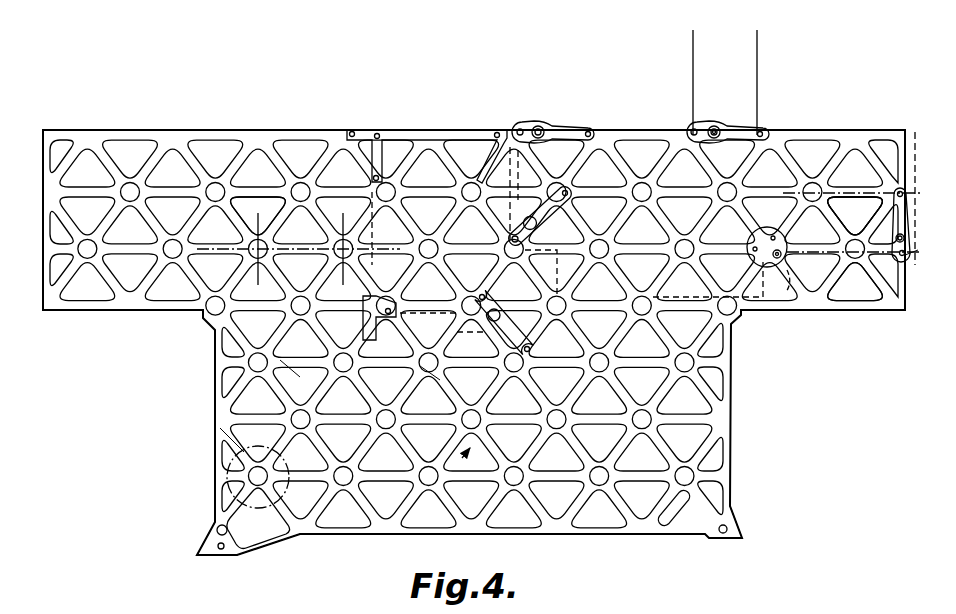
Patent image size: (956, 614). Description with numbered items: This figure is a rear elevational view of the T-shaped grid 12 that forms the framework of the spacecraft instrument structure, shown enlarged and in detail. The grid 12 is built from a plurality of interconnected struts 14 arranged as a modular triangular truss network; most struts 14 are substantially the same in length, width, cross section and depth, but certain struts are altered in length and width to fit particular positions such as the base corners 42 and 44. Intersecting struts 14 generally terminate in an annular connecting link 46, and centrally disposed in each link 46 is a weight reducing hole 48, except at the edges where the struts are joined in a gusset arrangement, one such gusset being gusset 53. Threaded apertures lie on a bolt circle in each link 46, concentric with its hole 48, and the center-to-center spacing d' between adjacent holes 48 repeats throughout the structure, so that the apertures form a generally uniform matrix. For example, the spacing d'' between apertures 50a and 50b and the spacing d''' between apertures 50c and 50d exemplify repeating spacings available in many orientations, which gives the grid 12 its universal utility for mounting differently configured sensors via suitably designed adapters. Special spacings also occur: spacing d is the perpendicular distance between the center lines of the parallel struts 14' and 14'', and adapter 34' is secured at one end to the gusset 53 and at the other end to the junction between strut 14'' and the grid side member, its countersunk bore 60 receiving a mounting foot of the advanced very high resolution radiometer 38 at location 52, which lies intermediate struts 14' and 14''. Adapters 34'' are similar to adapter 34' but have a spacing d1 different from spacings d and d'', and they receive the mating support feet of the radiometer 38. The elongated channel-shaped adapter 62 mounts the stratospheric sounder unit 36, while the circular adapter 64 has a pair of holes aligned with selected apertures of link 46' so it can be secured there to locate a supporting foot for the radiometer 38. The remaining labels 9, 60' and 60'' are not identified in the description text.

The pivot recess 9 is at (230, 478).
The grid 12 is at (814, 118).
The struts 14 is at (258, 166).
The strut 14' is at (839, 192).
The strut 14'' is at (855, 301).
The adapter 34' is at (860, 199).
The adapters 34'' is at (677, 105).
The stratospheric sounder unit 36 is at (372, 192).
The advanced very high resolution radiometer 38 is at (507, 135).
The base corner 42 is at (748, 518).
The base corner 44 is at (205, 530).
The annular connecting link 46 is at (474, 313).
The link 46' is at (790, 308).
The weight reducing hole 48 is at (208, 186).
The aperture 50a is at (225, 430).
The aperture 50b is at (306, 387).
The aperture 50c is at (441, 378).
The aperture 50d is at (472, 436).
The location 52 is at (915, 256).
The gusset 53 is at (900, 190).
The countersunk bore 60 is at (684, 271).
The pivot lever 60' is at (553, 106).
The pivot lever 60'' is at (713, 101).
The adapter 62 is at (470, 128).
The circular adapter 64 is at (776, 238).
The spacing d is at (851, 236).
The center-to-center spacing d' is at (298, 249).
The spacing d'' is at (276, 387).
The spacing d''' is at (429, 387).
The spacing d1 is at (693, 42).